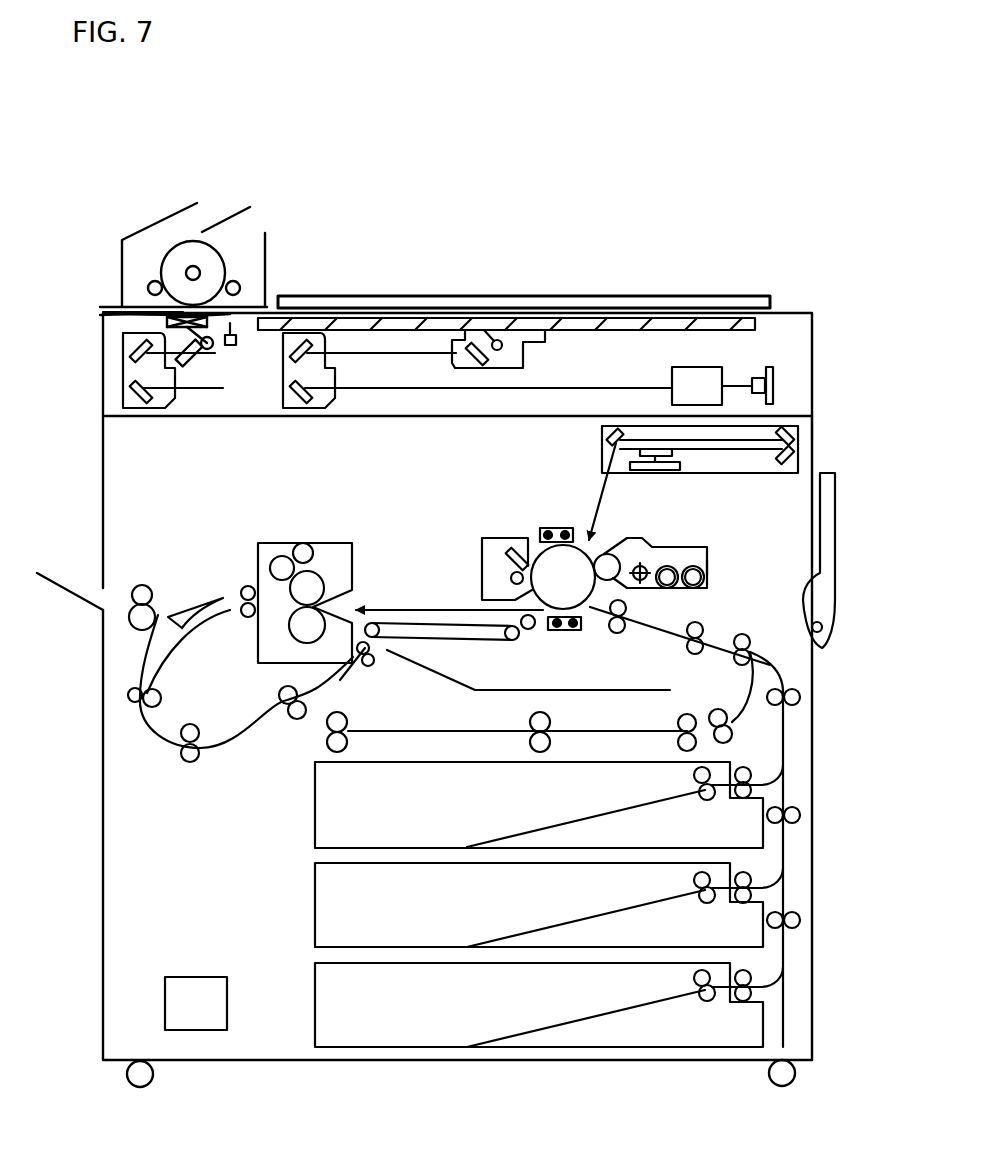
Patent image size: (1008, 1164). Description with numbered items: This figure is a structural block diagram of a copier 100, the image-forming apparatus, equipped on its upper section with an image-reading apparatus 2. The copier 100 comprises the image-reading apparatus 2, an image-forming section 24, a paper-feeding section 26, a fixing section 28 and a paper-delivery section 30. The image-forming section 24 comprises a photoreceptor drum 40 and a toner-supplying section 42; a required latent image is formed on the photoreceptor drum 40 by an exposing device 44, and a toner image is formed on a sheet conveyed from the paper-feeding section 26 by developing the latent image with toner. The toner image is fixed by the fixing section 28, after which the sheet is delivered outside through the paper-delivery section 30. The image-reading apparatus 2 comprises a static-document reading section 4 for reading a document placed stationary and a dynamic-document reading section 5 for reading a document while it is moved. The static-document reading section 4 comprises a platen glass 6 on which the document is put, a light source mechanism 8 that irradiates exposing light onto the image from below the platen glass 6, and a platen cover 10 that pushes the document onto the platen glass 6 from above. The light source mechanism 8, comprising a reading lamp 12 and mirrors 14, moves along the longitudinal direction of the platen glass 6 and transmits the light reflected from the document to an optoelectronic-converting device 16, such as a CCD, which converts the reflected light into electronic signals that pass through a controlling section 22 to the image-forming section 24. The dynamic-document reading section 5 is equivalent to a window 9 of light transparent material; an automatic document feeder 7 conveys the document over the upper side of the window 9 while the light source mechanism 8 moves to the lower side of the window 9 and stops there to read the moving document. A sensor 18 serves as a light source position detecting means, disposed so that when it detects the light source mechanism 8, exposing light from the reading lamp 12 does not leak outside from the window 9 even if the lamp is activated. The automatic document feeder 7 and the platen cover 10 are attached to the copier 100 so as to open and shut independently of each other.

The image-reading apparatus 2 is at (794, 293).
The static-document reading section 4 is at (712, 320).
The dynamic-document reading section 5 is at (95, 310).
The platen glass 6 is at (506, 284).
The automatic document feeder 7 is at (178, 252).
The light source mechanism 8 is at (140, 394).
The window 9 is at (125, 310).
The platen cover 10 is at (626, 297).
The reading lamp 12 is at (500, 340).
The mirrors 14 is at (472, 370).
The optoelectronic-converting device 16 is at (780, 377).
The sensor 18 is at (240, 307).
The controlling section 22 is at (180, 1015).
The image-forming section 24 is at (681, 542).
The paper-feeding section 26 is at (802, 884).
The fixing section 28 is at (302, 538).
The paper-delivery section 30 is at (87, 580).
The photoreceptor drum 40 is at (538, 562).
The toner-supplying section 42 is at (709, 562).
The exposing device 44 is at (796, 467).
The copier 100 is at (823, 432).